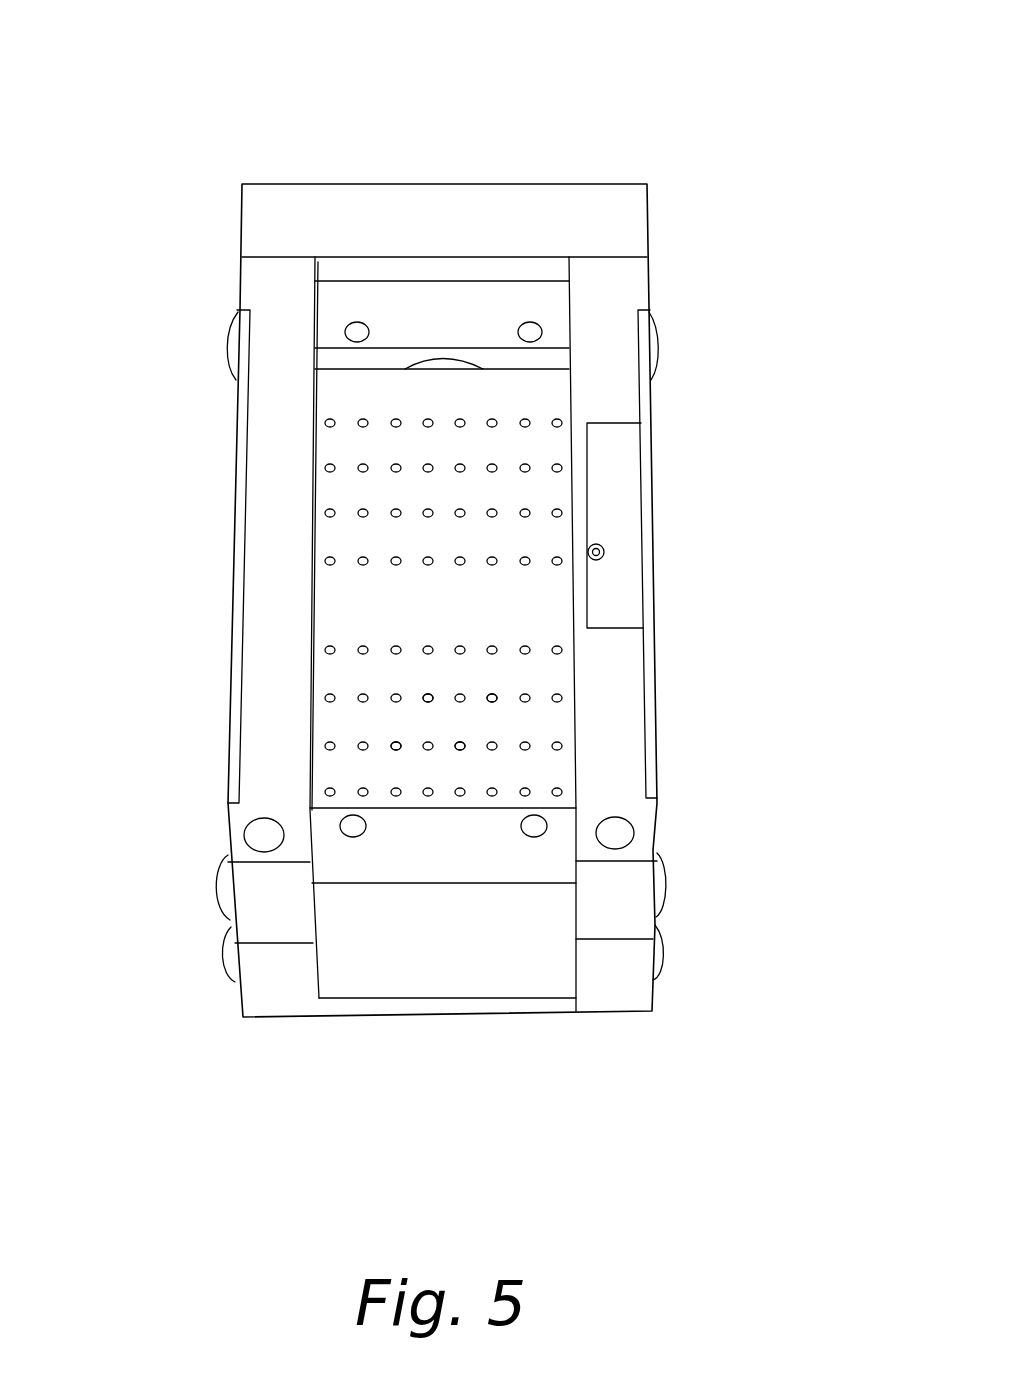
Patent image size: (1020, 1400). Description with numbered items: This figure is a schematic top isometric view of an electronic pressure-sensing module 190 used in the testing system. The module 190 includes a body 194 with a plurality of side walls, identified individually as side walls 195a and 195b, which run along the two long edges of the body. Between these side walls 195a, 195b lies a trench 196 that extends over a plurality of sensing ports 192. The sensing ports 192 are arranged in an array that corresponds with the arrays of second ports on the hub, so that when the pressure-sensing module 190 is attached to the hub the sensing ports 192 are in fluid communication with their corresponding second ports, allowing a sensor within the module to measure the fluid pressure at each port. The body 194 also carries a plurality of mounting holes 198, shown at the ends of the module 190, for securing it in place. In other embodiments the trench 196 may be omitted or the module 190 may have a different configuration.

The electronic pressure-sensing module 190 is at (661, 73).
The sensing ports 192 is at (492, 702).
The body 194 is at (500, 962).
The side wall 195a is at (643, 680).
The side wall 195b is at (242, 593).
The trench 196 is at (350, 773).
The mounting holes 198 is at (352, 834).